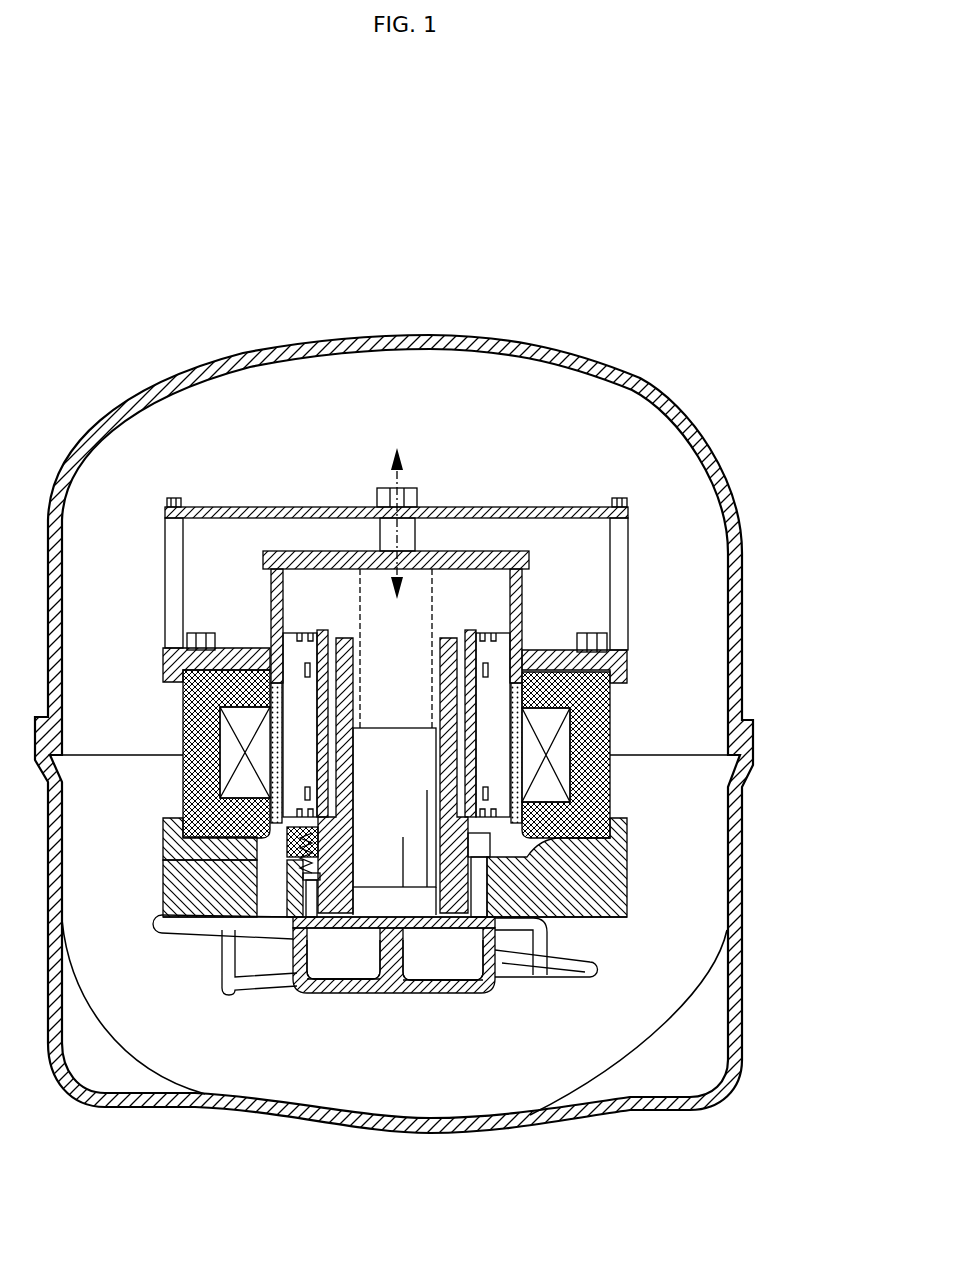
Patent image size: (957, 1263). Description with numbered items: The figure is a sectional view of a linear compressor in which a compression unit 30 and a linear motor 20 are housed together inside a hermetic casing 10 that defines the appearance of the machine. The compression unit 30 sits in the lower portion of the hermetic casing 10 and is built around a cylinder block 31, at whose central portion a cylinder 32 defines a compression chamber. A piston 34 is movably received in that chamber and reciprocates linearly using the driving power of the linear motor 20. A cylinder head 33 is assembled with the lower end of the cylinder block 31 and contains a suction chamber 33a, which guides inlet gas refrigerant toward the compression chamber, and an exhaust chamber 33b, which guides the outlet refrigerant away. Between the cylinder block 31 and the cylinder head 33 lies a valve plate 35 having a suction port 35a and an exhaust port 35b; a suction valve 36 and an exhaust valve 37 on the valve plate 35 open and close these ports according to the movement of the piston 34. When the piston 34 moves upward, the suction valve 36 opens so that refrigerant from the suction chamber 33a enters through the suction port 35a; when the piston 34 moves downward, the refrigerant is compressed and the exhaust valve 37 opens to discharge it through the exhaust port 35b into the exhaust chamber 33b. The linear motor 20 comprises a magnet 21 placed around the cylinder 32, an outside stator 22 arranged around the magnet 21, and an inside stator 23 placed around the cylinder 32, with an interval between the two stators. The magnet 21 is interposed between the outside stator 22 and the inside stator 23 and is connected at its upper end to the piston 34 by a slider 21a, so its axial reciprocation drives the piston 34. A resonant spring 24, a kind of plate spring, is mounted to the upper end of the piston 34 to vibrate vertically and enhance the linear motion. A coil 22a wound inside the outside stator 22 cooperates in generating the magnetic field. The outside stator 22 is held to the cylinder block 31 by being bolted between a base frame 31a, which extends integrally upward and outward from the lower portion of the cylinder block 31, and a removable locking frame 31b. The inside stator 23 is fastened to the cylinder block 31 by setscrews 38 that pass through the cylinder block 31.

The hermetic casing 10 is at (753, 512).
The linear motor 20 is at (640, 647).
The magnet 21 is at (515, 731).
The slider 21a is at (336, 551).
The outside stator 22 is at (628, 803).
The coil 22a is at (557, 763).
The inside stator 23 is at (508, 855).
The resonant spring 24 is at (452, 507).
The compression unit 30 is at (582, 925).
The cylinder block 31 is at (613, 887).
The base frame 31a is at (163, 823).
The locking frame 31b is at (163, 669).
The cylinder 32 is at (343, 732).
The cylinder head 33 is at (392, 983).
The suction chamber 33a is at (321, 967).
The exhaust chamber 33b is at (427, 967).
The piston 34 is at (373, 814).
The valve plate 35 is at (293, 921).
The suction port 35a is at (357, 980).
The exhaust port 35b is at (490, 980).
The suction valve 36 is at (308, 985).
The exhaust valve 37 is at (427, 982).
The setscrews 38 is at (215, 862).